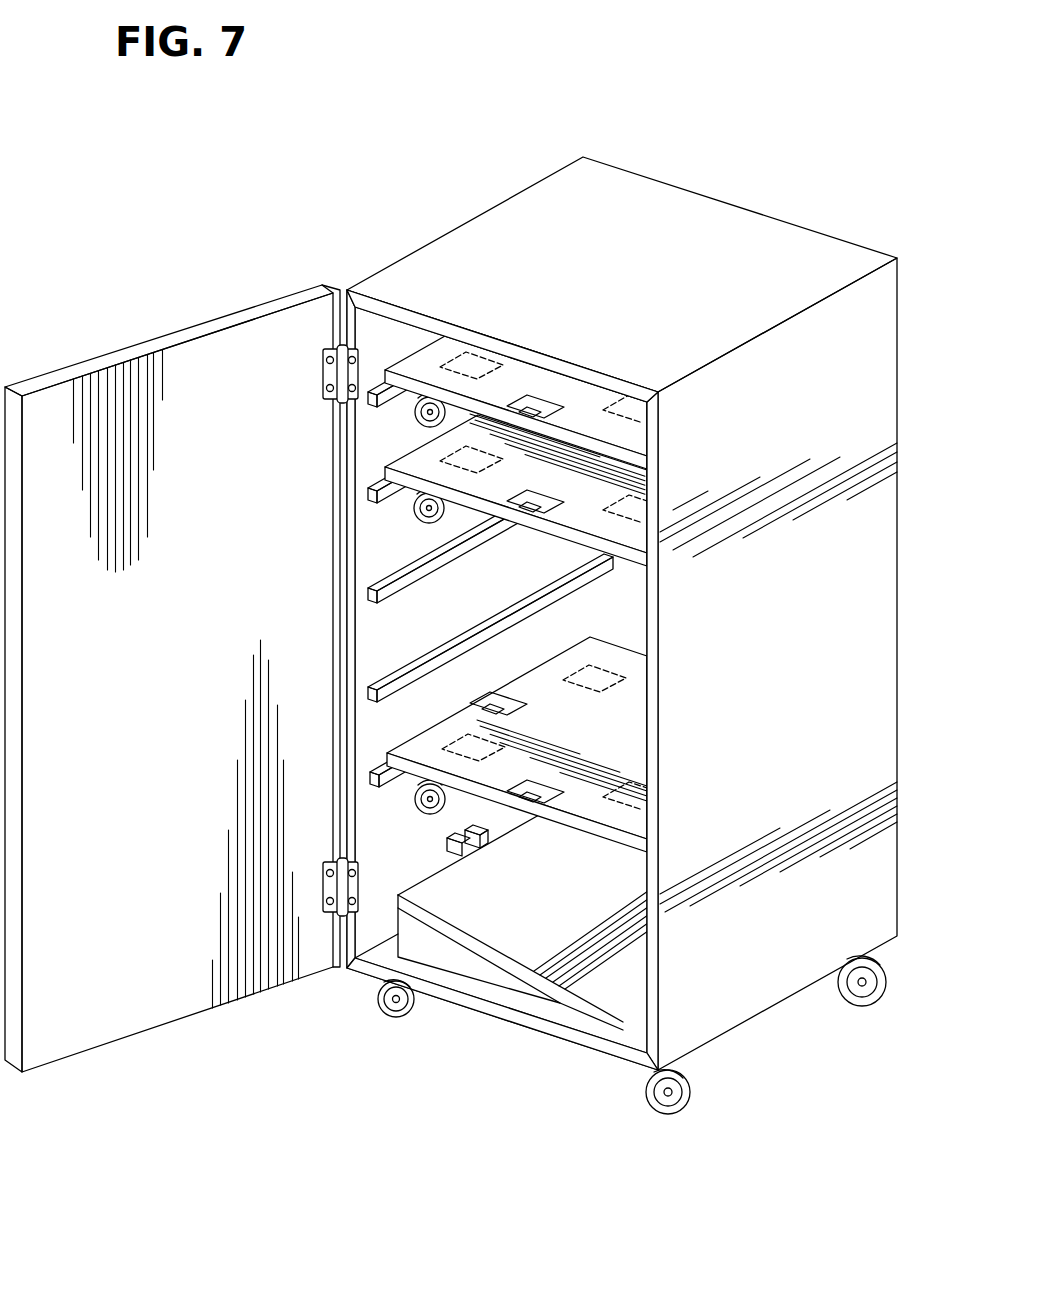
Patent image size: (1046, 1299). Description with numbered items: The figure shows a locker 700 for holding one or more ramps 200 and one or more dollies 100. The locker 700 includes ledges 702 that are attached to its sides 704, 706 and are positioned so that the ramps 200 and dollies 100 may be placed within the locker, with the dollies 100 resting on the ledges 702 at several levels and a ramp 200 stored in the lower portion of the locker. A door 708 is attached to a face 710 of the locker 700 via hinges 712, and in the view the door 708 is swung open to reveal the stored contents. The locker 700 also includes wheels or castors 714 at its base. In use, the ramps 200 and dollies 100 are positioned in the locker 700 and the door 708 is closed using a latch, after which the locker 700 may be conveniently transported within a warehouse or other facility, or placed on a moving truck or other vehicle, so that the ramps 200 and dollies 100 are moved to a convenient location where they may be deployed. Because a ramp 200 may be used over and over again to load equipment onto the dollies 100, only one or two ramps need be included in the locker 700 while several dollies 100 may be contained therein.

The dolly 100 is at (645, 439).
The ramp 200 is at (600, 990).
The locker 700 is at (690, 214).
The ledge 702 is at (380, 392).
The side 704 is at (376, 718).
The side 706 is at (653, 997).
The door 708 is at (28, 384).
The face 710 is at (522, 1022).
The hinge 712 is at (330, 372).
The wheels or castors 714 is at (383, 1017).